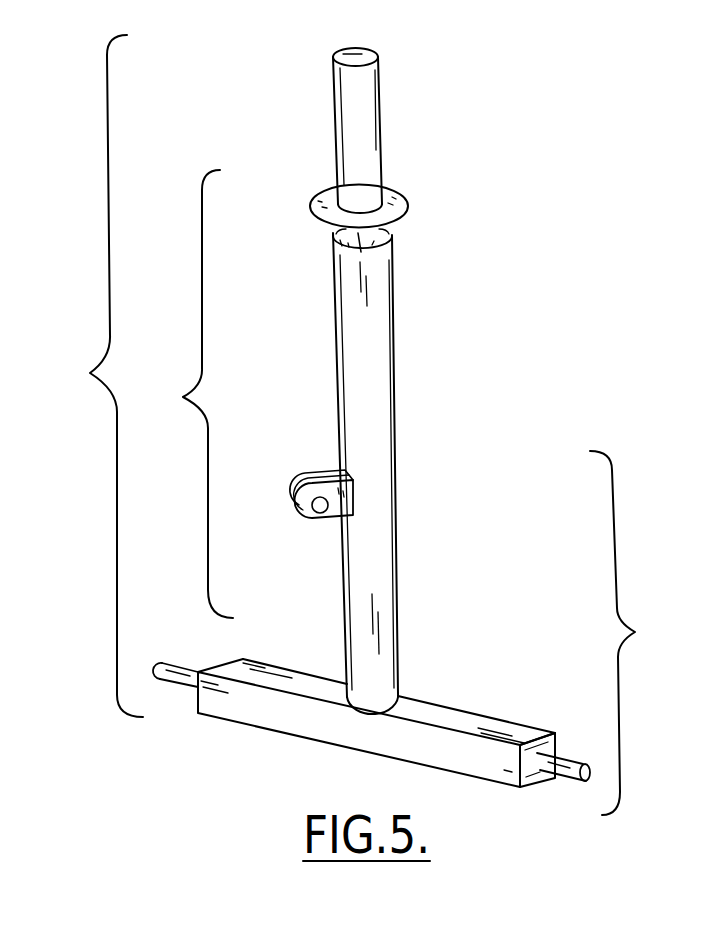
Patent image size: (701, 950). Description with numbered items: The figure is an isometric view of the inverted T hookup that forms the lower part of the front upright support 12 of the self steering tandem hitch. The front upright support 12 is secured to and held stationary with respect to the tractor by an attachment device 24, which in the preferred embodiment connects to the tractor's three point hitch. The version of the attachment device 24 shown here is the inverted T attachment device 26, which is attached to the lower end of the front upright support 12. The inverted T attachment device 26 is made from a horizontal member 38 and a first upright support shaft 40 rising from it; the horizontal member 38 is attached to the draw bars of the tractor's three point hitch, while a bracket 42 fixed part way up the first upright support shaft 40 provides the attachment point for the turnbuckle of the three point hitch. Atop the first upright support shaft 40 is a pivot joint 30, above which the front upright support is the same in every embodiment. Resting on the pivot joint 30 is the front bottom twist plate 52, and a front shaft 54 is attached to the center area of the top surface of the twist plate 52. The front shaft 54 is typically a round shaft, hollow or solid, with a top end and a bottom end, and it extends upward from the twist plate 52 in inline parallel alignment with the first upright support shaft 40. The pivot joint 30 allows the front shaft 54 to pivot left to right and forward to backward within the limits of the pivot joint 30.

The front upright support 12 is at (187, 394).
The attachment device 24 is at (90, 376).
The inverted T attachment device 26 is at (642, 633).
The pivot joint 30 is at (392, 229).
The horizontal member 38 is at (430, 700).
The first upright support shaft 40 is at (397, 362).
The bracket 42 is at (355, 500).
The front bottom twist plate 52 is at (405, 196).
The front shaft 54 is at (383, 90).